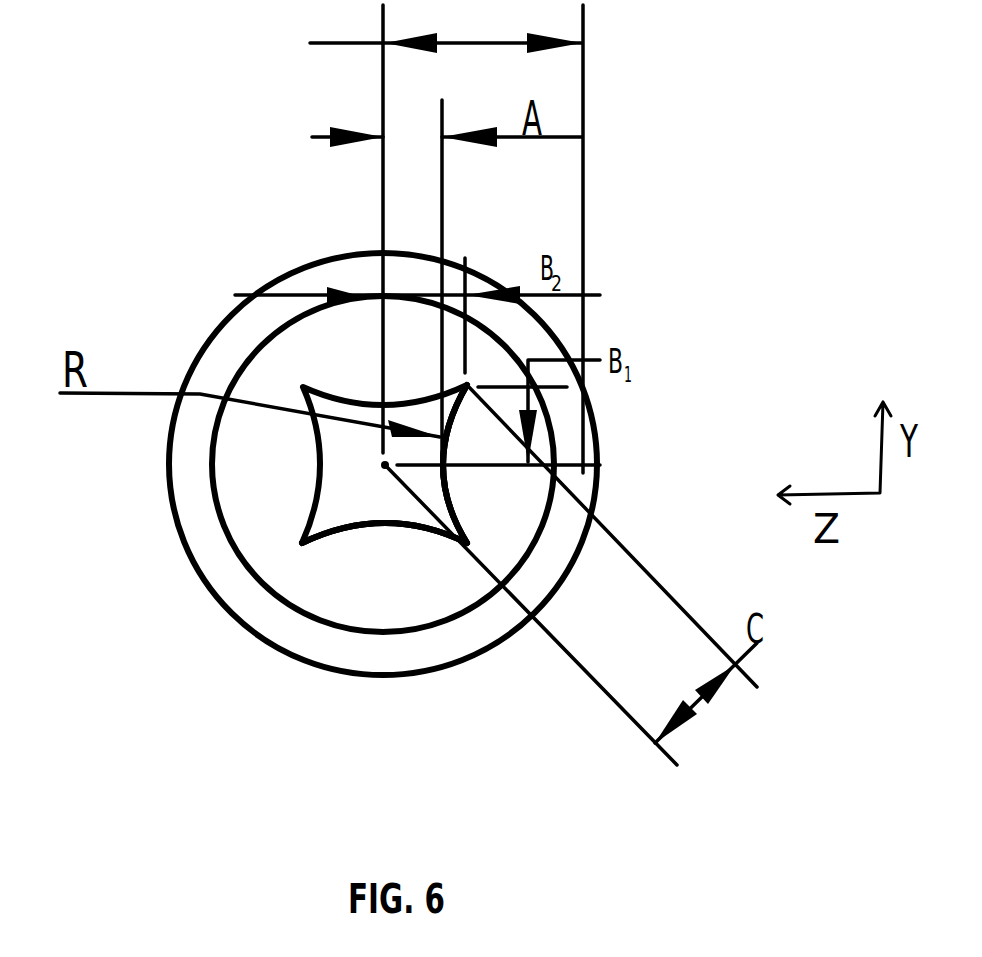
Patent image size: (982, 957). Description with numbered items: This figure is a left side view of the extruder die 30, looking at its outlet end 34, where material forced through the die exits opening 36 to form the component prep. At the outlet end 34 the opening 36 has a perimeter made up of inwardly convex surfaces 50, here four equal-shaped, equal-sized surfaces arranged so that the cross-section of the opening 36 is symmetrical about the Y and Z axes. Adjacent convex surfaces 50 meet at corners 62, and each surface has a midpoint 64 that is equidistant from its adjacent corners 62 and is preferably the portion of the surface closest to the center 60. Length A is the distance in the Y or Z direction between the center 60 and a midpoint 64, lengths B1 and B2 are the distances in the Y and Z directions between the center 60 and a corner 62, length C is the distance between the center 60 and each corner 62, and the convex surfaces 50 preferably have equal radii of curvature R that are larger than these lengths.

The die 30 is at (85, 51).
The outlet end 34 is at (220, 380).
The opening 36 is at (353, 507).
The inwardly convex surfaces 50 is at (450, 503).
The center 60 is at (380, 465).
The corners 62 is at (300, 382).
The midpoint 64 is at (450, 467).